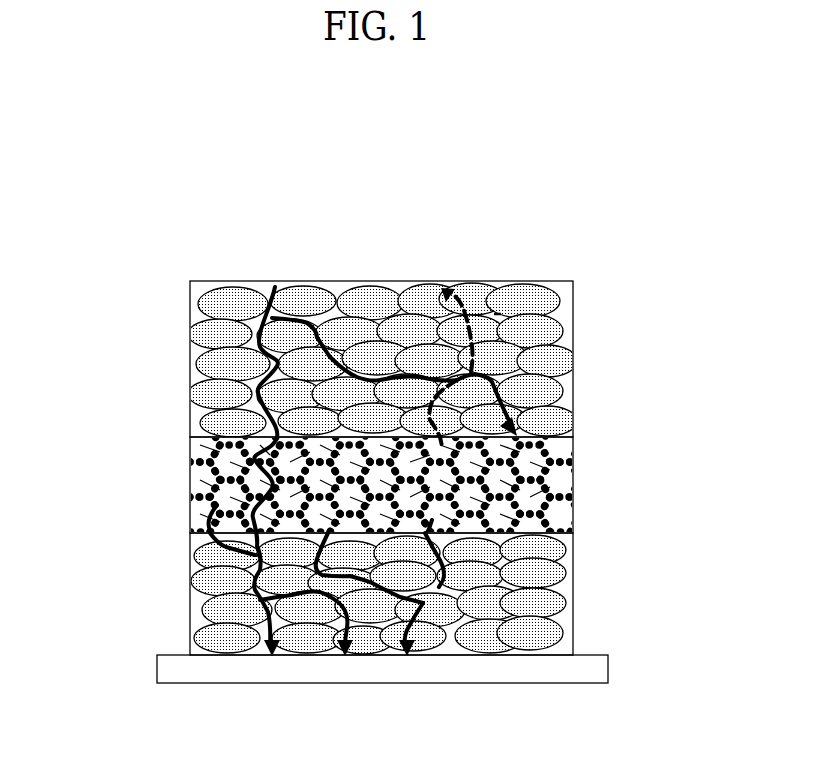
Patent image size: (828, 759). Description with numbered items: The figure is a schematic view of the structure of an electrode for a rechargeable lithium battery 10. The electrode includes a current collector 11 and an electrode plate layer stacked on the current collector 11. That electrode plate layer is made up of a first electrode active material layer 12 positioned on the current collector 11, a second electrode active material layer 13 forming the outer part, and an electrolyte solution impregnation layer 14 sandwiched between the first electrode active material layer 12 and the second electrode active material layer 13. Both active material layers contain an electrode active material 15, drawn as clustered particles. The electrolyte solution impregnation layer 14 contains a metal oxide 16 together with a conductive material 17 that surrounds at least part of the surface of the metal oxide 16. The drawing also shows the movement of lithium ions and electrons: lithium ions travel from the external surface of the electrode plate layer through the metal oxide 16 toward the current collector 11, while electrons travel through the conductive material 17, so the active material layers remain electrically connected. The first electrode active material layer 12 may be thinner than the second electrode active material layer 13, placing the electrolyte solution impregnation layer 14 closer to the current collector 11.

The rechargeable lithium battery 10 is at (448, 215).
The current collector 11 is at (388, 672).
The first electrode active material layer 12 is at (190, 608).
The second electrode active material layer 13 is at (190, 312).
The electrolyte solution impregnation layer 14 is at (190, 487).
The electrode active material 15 is at (560, 352).
The metal oxide 16 is at (565, 447).
The conductive material 17 is at (590, 492).